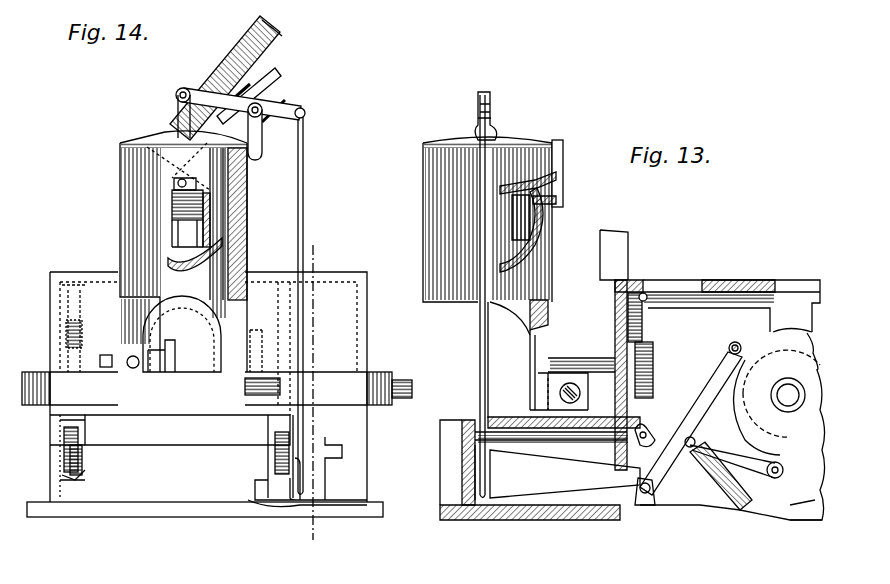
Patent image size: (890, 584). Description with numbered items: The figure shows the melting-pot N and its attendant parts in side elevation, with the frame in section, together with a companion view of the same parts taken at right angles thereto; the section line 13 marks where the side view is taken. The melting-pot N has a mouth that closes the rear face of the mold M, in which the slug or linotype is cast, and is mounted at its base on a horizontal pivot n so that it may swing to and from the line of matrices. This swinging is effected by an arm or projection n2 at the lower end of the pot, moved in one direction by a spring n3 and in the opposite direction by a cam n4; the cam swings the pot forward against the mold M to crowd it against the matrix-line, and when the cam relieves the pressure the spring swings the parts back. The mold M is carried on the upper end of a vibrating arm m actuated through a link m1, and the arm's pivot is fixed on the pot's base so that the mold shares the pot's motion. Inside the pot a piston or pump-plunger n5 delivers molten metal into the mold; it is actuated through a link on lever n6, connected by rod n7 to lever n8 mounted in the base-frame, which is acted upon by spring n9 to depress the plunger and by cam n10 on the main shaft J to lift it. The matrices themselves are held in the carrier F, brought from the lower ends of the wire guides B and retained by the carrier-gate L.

In FIG. 14, the melting-pot N is at (117, 203).
In FIG. 13, the mold M is at (425, 232).
In FIG. 14, the carrier F is at (225, 78).
In FIG. 14, the wire guides B is at (275, 56).
In FIG. 14, the carrier-gate L is at (284, 80).
In FIG. 14, the main shaft J is at (407, 378).
In FIG. 13, the main shaft J is at (785, 400).
In FIG. 14, the vibrating arm m is at (158, 332).
In FIG. 14, the link m1 is at (176, 357).
In FIG. 14, the horizontal pivot n is at (285, 390).
In FIG. 13, the horizontal pivot n is at (572, 385).
In FIG. 14, the arm or projection n2 is at (82, 470).
In FIG. 13, the arm or projection n2 is at (645, 442).
In FIG. 14, the spring n3 is at (83, 348).
In FIG. 13, the spring n3 is at (660, 365).
In FIG. 13, the cam n4 is at (805, 500).
In FIG. 14, the piston or pump-plunger n5 is at (205, 202).
In FIG. 14, the lever n6 is at (305, 112).
In FIG. 13, the lever n6 is at (493, 110).
In FIG. 14, the rod n7 is at (305, 193).
In FIG. 13, the rod n7 is at (479, 365).
In FIG. 14, the lever n8 is at (268, 460).
In FIG. 13, the lever n8 is at (700, 402).
In FIG. 14, the spring n9 is at (302, 462).
In FIG. 13, the spring n9 is at (720, 480).
In FIG. 14, the cam n10 is at (62, 447).
In FIG. 13, the cam n10 is at (777, 402).
In FIG. 14, the section line 13 is at (309, 389).